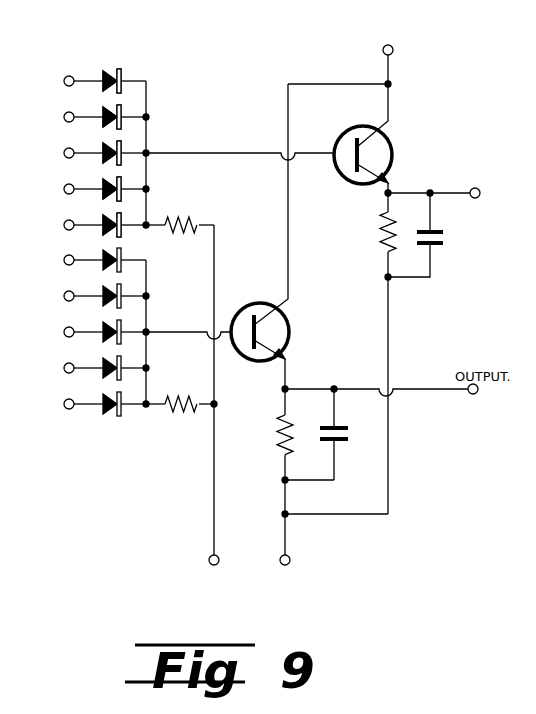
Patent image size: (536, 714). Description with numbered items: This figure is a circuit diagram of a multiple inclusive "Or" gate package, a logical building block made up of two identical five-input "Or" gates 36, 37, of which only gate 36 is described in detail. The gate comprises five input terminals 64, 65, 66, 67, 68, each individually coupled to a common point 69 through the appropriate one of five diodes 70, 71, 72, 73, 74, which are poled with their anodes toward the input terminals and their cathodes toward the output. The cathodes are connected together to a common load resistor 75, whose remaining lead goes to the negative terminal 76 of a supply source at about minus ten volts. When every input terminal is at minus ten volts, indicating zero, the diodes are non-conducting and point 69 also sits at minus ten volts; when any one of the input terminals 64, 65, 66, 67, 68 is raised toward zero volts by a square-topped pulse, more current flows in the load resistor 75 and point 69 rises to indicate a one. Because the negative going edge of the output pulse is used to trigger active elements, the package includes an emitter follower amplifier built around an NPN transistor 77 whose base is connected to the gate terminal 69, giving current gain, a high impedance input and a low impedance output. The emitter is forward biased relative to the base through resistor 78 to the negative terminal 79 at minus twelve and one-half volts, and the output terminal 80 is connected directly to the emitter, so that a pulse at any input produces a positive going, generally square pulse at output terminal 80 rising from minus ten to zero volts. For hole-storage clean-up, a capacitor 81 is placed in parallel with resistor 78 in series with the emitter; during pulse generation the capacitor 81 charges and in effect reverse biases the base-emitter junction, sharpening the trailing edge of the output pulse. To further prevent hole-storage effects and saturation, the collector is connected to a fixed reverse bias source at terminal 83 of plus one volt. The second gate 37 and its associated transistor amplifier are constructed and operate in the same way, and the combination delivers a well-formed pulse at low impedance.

The "Or" gate 36 is at (154, 160).
The "Or" gate 37 is at (151, 326).
The input terminal 64 is at (64, 81).
The input terminal 65 is at (64, 117).
The input terminal 66 is at (64, 153).
The input terminal 67 is at (64, 189).
The input terminal 68 is at (64, 225).
The point 69 is at (148, 151).
The diode 70 is at (123, 80).
The diode 71 is at (123, 116).
The diode 72 is at (123, 152).
The diode 73 is at (123, 188).
The diode 74 is at (123, 224).
The common load resistor 75 is at (176, 236).
The negative terminal 76 is at (208, 560).
The transistor 77 is at (344, 181).
The resistor 78 is at (378, 227).
The negative terminal 79 is at (291, 559).
The output terminal 80 is at (476, 186).
The capacitor 81 is at (438, 246).
The terminal 83 is at (394, 50).